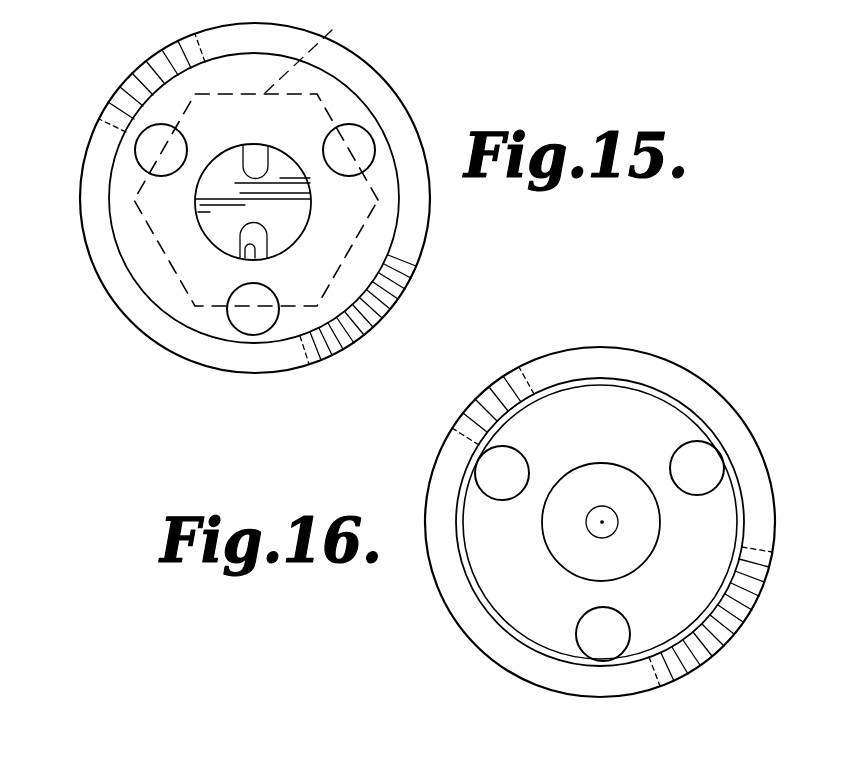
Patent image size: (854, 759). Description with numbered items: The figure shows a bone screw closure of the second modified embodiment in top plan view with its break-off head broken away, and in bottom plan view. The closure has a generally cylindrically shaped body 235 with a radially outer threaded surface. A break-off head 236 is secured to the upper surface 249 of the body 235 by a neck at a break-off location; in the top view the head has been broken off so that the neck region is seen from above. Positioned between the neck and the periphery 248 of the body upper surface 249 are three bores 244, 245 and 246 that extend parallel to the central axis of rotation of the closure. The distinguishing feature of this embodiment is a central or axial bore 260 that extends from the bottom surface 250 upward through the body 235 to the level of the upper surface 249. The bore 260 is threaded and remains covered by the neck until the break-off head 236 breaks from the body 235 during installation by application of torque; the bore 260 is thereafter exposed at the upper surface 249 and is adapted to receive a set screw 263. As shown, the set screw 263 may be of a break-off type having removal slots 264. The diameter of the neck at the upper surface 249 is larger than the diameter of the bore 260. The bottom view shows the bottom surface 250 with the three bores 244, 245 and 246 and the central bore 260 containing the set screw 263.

In FIG. 15, the body 235 is at (385, 79).
In FIG. 16, the body 235 is at (760, 442).
In FIG. 15, the break-off head 236 is at (327, 36).
In FIG. 15, the bore 244 is at (250, 323).
In FIG. 16, the bore 244 is at (520, 464).
In FIG. 15, the bore 245 is at (150, 130).
In FIG. 16, the bore 245 is at (624, 634).
In FIG. 15, the bore 246 is at (365, 139).
In FIG. 16, the bore 246 is at (696, 460).
In FIG. 15, the periphery 248 is at (322, 357).
In FIG. 15, the upper surface 249 is at (387, 318).
In FIG. 16, the bottom surface 250 is at (612, 395).
In FIG. 15, the central bore 260 is at (197, 186).
In FIG. 16, the central bore 260 is at (552, 548).
In FIG. 15, the set screw 263 is at (288, 220).
In FIG. 16, the set screw 263 is at (642, 528).
In FIG. 15, the removal slots 264 is at (262, 160).